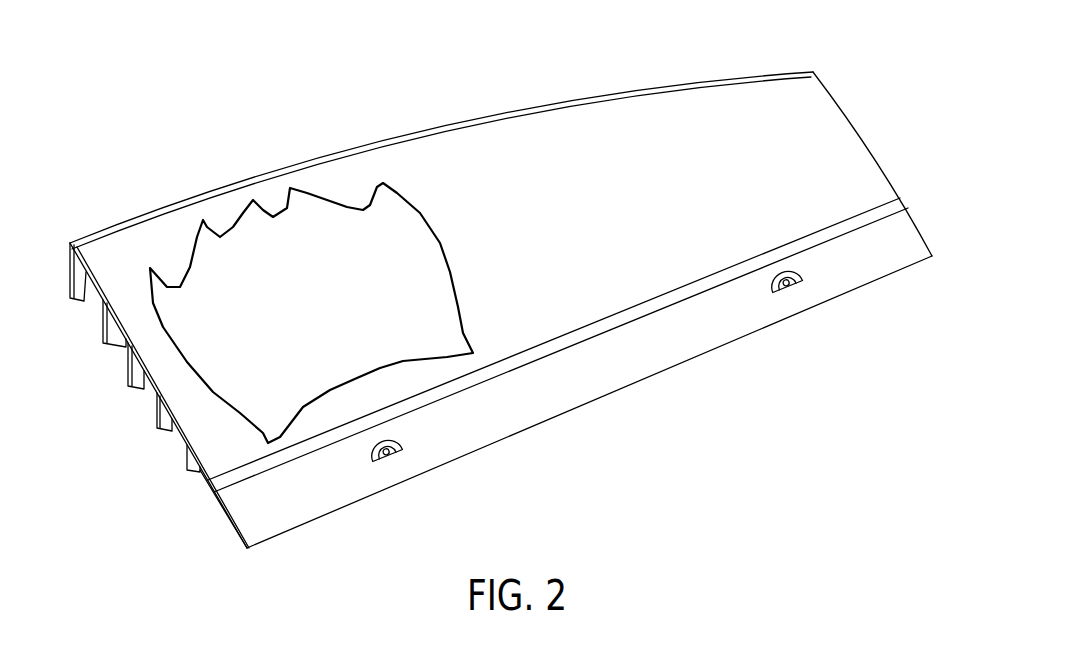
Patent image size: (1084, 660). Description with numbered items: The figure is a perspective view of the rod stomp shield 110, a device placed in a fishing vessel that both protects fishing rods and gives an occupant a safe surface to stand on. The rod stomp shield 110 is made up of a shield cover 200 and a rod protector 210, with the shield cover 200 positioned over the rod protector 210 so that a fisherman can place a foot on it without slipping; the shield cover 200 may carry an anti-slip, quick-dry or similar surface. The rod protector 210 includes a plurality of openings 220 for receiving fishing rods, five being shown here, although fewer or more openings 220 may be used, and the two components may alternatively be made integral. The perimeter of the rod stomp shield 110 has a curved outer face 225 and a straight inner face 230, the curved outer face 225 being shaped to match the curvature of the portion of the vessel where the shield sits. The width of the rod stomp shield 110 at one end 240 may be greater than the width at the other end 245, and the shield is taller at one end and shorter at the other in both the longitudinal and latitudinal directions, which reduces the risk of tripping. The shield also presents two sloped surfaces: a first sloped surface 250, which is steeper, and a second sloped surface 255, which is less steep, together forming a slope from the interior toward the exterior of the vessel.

The shield cover 200 is at (487, 313).
The curved outer face 225 is at (546, 103).
The other end 245 is at (883, 121).
The second sloped surface 255 is at (521, 333).
The first sloped surface 250 is at (495, 430).
The straight inner face 230 is at (550, 418).
The rod stomp shield 110 is at (785, 474).
The one end 240 is at (170, 526).
The rod protector 210 is at (100, 331).
The openings 220 is at (203, 490).